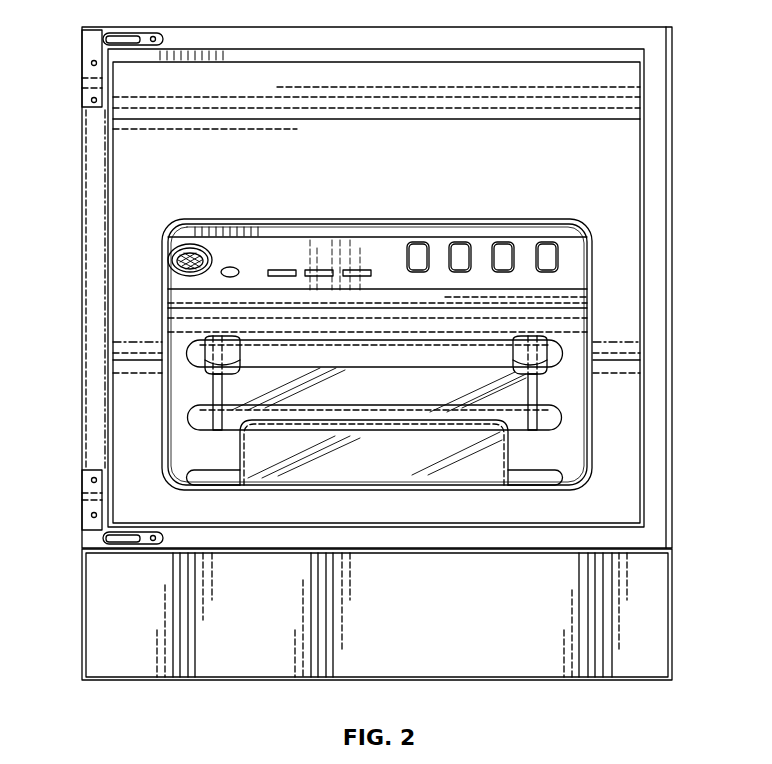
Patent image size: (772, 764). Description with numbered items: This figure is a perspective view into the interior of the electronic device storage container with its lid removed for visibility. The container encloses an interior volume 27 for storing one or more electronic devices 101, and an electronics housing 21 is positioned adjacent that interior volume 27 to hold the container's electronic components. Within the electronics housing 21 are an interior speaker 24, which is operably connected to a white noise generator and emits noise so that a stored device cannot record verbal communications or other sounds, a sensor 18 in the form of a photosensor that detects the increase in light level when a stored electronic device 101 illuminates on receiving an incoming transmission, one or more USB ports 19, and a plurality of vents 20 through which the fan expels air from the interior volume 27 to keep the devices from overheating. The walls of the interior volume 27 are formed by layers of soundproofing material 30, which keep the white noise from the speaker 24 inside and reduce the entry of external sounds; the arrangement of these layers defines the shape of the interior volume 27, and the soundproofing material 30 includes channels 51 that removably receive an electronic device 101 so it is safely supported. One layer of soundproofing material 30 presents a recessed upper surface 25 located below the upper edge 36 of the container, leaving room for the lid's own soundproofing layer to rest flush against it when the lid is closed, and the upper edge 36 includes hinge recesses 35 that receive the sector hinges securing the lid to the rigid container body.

The sensor 18 is at (225, 267).
The USB ports 19 is at (322, 267).
The vents 20 is at (505, 257).
The electronics housing 21 is at (388, 258).
The interior speaker 24 is at (195, 245).
The recessed upper surface 25 is at (591, 156).
The interior volume 27 is at (197, 441).
The soundproofing material 30 is at (628, 208).
The hinge recesses 35 is at (92, 68).
The upper edge 36 is at (652, 104).
The channels 51 is at (556, 350).
The electronic device 101 is at (373, 472).